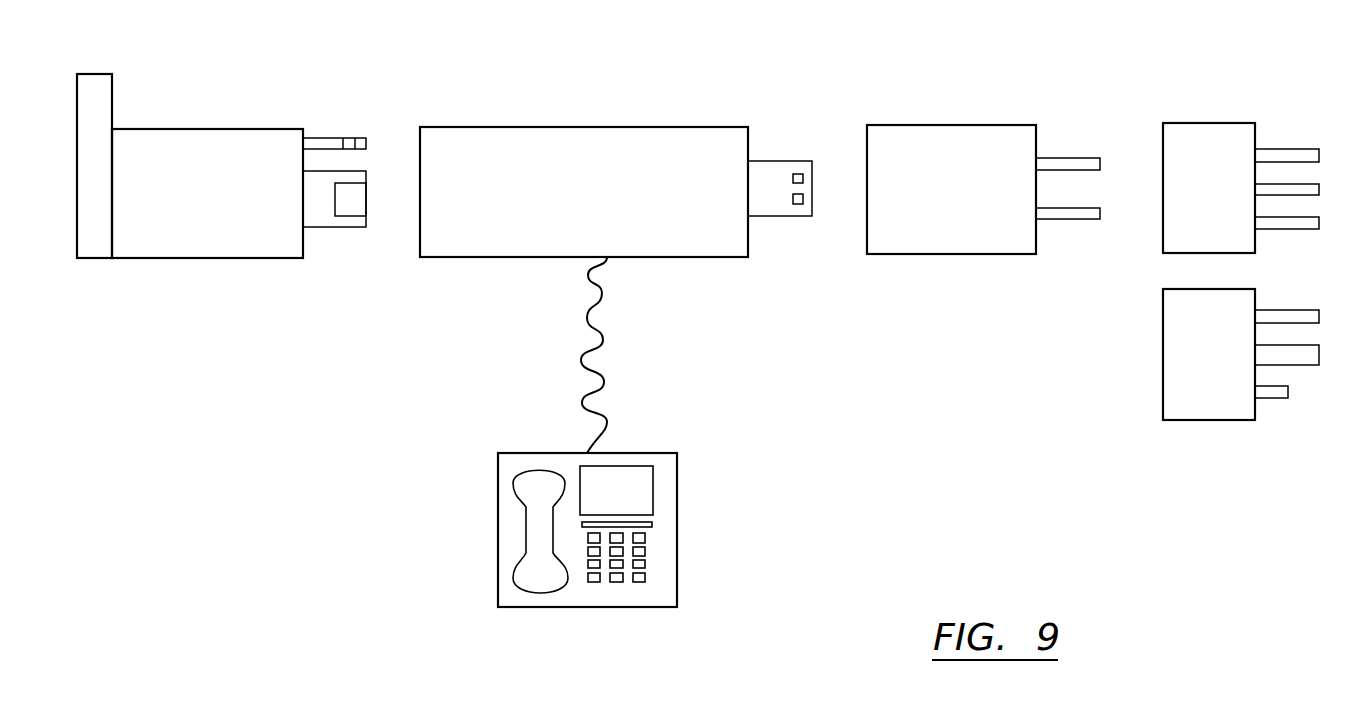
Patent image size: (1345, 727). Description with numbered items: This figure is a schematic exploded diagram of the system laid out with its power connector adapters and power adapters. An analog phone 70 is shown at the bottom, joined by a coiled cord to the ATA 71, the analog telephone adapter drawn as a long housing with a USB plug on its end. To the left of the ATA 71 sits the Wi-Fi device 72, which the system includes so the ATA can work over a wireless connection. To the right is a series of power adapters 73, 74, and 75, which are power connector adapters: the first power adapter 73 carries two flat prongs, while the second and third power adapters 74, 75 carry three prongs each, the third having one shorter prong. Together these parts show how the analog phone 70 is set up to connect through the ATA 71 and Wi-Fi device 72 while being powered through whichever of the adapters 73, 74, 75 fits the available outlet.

The analog phone 70 is at (638, 452).
The ATA 71 is at (660, 127).
The Wi-Fi device 72 is at (233, 129).
The power adapter 73 is at (995, 124).
The power adapter 74 is at (1228, 122).
The power adapter 75 is at (1240, 288).